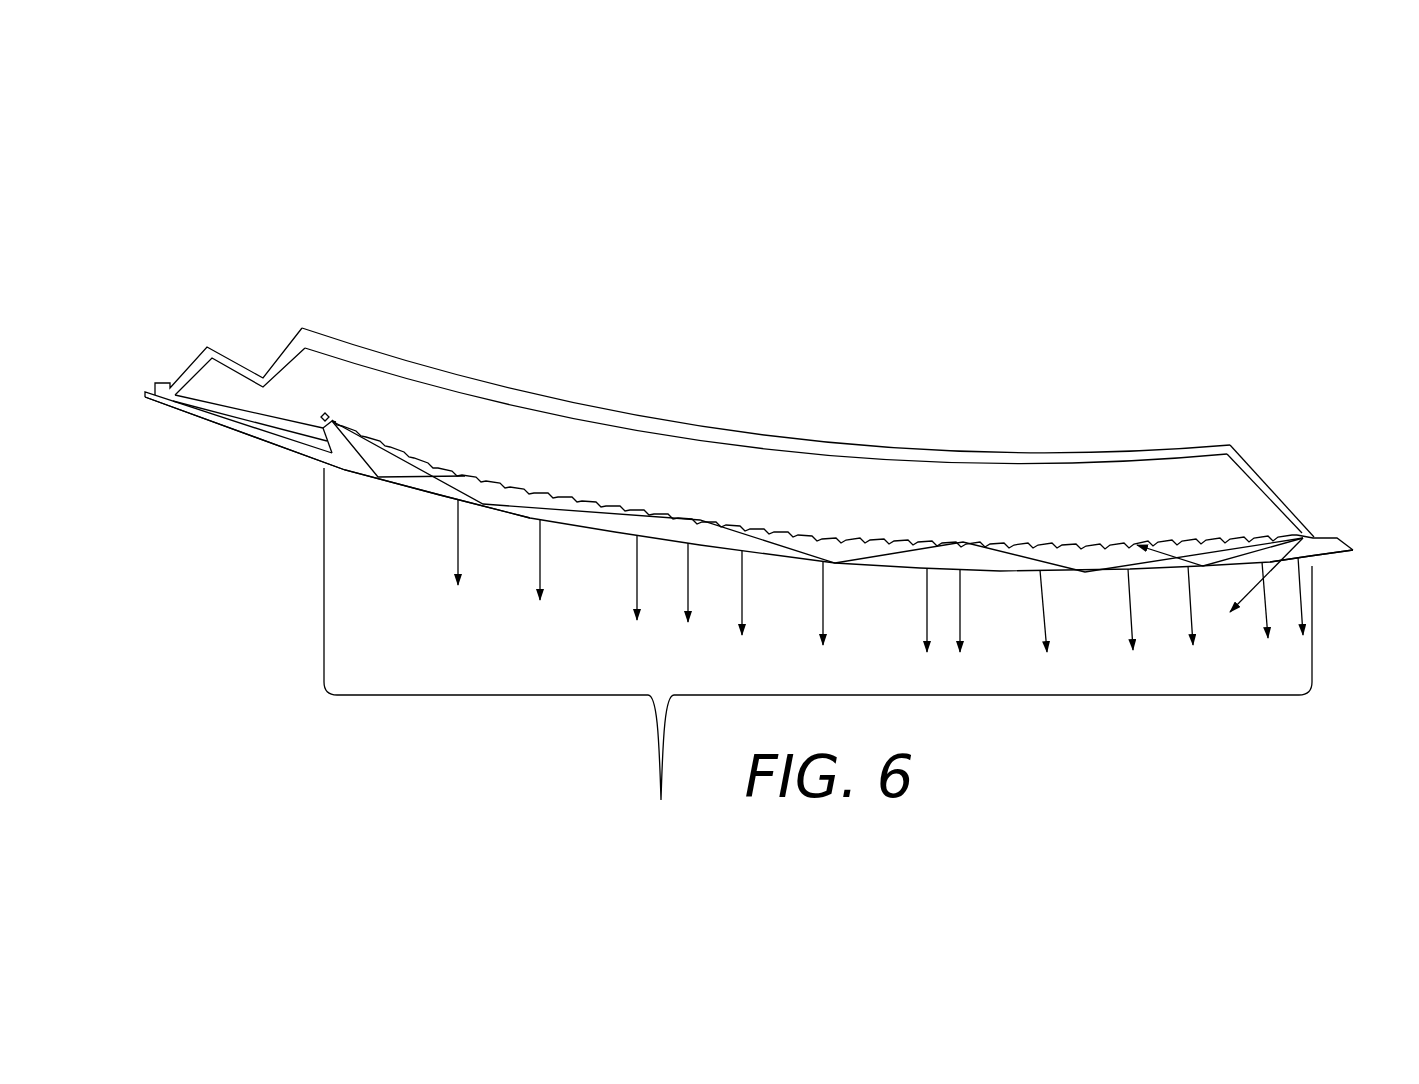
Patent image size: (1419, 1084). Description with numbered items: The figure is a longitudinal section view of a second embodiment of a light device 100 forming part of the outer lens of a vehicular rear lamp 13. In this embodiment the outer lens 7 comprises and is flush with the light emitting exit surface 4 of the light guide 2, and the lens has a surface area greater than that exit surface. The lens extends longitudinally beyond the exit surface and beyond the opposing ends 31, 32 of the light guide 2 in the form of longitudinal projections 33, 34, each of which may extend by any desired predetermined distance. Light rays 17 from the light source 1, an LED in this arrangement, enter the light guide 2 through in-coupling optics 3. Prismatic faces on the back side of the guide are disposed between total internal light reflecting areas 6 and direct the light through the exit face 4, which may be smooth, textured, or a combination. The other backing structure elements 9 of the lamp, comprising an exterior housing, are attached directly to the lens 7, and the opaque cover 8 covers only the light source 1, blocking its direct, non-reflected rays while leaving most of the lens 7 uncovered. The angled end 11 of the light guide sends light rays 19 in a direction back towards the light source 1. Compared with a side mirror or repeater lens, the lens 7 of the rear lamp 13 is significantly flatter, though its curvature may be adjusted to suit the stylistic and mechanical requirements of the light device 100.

The light device 100 is at (1031, 271).
The light source 1 is at (324, 406).
The light guide 2 is at (390, 460).
The in-coupling optics 3 is at (339, 414).
The light emitting exit surface 4 is at (818, 654).
The total internal light reflecting areas 6 is at (562, 494).
The outer lens 7 is at (273, 446).
The cover 8 is at (228, 402).
The backing structure elements 9 is at (896, 450).
The angled end 11 is at (1322, 536).
The rear lamp 13 is at (303, 469).
The light rays 17 is at (455, 554).
The light rays 19 is at (1234, 537).
The end of light guide 31 is at (323, 430).
The end of light guide 32 is at (1309, 542).
The longitudinal projection 33 is at (202, 416).
The longitudinal projection 34 is at (1340, 553).